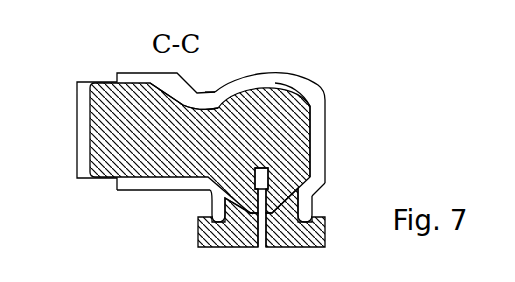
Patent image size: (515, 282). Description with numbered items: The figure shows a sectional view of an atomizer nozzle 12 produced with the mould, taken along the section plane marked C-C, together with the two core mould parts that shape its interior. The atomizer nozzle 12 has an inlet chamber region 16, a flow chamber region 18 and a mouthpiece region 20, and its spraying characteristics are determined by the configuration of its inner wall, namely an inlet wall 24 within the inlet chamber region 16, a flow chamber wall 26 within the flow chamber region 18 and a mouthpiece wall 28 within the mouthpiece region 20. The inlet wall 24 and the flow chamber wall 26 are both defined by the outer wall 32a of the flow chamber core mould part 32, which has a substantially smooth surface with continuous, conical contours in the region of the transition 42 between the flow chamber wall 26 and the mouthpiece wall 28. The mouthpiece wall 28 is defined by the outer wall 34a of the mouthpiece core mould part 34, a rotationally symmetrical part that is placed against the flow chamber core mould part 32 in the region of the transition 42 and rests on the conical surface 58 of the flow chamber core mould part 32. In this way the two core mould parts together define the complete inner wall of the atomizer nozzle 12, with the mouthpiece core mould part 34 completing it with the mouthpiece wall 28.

The atomizer nozzle 12 is at (212, 84).
The inlet chamber region 16 is at (133, 80).
The flow chamber region 18 is at (301, 90).
The mouthpiece region 20 is at (303, 211).
The inlet wall 24 is at (183, 110).
The flow chamber wall 26 is at (309, 125).
The mouthpiece wall 28 is at (291, 235).
The flow chamber core mould part 32 is at (266, 98).
The outer wall of flow chamber core mould part 32a is at (288, 93).
The mouthpiece core mould part 34 is at (313, 236).
The outer wall of mouthpiece core mould part 34a is at (211, 210).
The transition 42 is at (312, 193).
The conical surface 58 is at (216, 190).